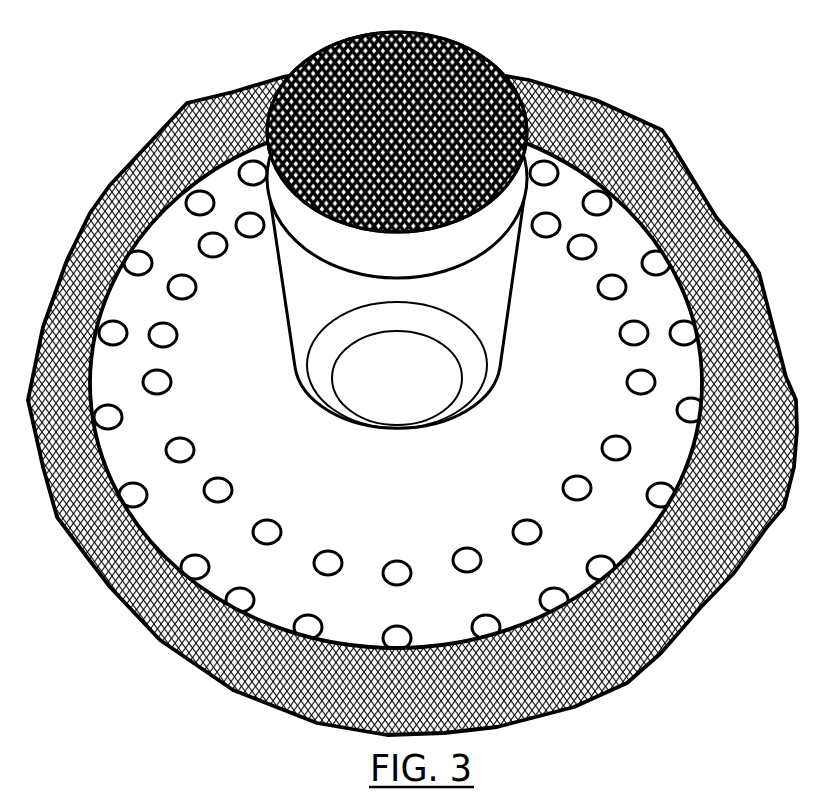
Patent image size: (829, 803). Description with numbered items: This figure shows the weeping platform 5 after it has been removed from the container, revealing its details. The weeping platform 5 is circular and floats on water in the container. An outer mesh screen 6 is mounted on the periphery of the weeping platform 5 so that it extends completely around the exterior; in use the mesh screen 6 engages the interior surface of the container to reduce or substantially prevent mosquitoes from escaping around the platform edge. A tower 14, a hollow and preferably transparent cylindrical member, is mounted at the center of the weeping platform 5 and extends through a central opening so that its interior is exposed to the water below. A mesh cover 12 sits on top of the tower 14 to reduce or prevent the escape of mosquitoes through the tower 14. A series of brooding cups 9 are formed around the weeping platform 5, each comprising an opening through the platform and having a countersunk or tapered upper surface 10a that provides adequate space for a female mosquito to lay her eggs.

The mesh screen 6 is at (95, 212).
The mesh cover 12 is at (463, 45).
The weeping platform 5 is at (257, 333).
The tower 14 is at (492, 266).
The brooding cups 9 is at (267, 540).
The tapered upper surface 10a is at (167, 333).